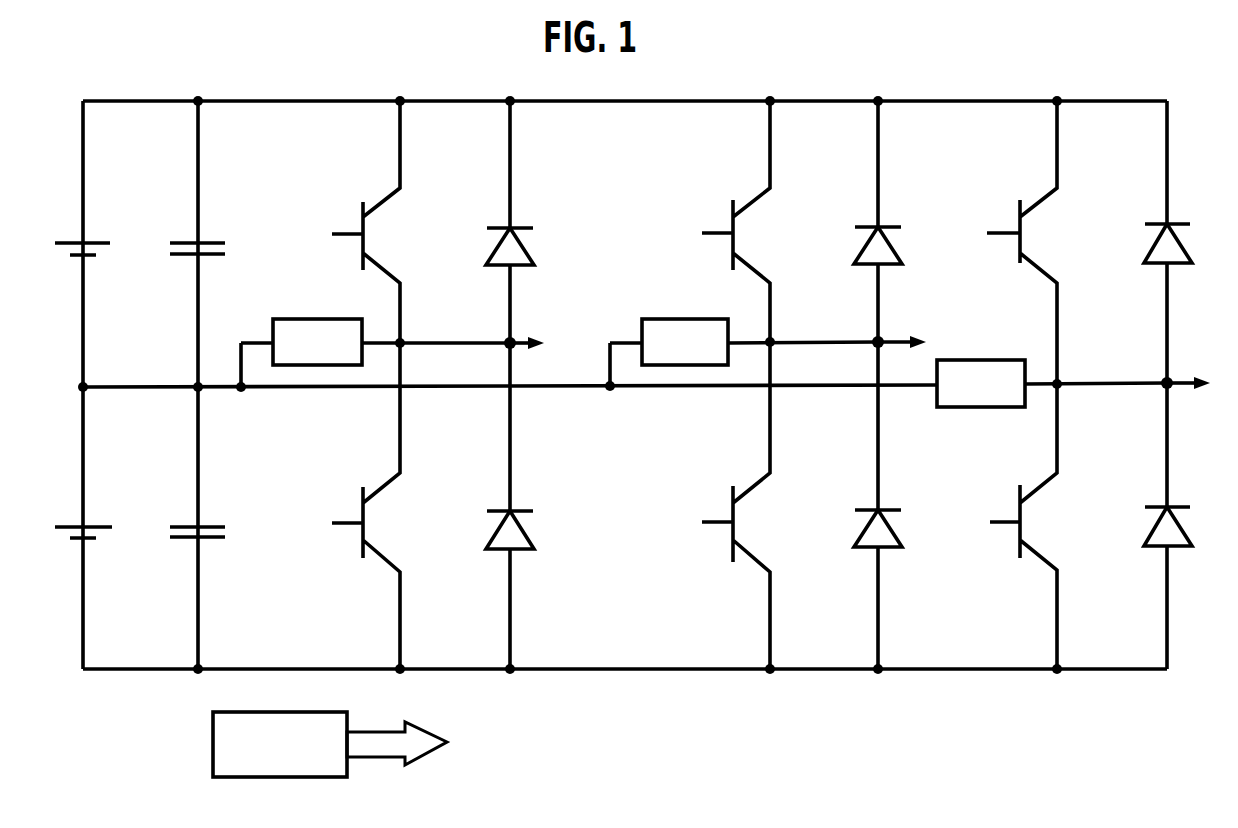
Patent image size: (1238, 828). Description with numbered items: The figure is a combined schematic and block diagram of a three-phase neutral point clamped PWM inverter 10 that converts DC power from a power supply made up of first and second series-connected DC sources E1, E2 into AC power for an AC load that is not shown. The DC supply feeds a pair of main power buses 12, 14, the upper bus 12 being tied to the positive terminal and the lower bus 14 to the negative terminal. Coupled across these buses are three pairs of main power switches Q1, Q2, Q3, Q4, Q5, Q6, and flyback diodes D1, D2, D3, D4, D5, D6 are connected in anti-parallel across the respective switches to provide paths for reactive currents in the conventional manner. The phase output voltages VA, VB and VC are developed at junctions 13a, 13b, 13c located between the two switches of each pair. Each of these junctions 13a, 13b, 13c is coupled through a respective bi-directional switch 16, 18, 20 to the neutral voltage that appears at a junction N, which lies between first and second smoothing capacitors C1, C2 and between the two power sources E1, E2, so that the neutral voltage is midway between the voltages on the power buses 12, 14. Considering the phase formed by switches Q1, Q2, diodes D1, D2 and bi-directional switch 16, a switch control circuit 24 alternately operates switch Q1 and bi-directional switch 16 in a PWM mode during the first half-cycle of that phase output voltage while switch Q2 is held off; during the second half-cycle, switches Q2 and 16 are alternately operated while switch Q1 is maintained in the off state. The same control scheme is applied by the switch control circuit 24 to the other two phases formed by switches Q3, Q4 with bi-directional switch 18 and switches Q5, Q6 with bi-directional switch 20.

The neutral point clamped PWM inverter 10 is at (926, 680).
The main power bus 12 is at (330, 100).
The main power bus 14 is at (318, 671).
The junction 13a is at (513, 340).
The junction 13b is at (881, 338).
The junction 13c is at (1172, 378).
The bi-directional switch 16 is at (305, 319).
The bi-directional switch 18 is at (700, 319).
The bi-directional switch 20 is at (1030, 332).
The switch control circuit 24 is at (272, 712).
The junction N is at (197, 386).
The DC source E1 is at (73, 243).
The DC source E2 is at (73, 527).
The smoothing capacitor C1 is at (214, 243).
The smoothing capacitor C2 is at (214, 527).
The main power switch Q1 is at (386, 195).
The main power switch Q2 is at (390, 568).
The main power switch Q3 is at (756, 195).
The main power switch Q4 is at (753, 557).
The main power switch Q5 is at (1043, 196).
The main power switch Q6 is at (1040, 556).
The flyback diode D1 is at (520, 227).
The flyback diode D2 is at (527, 510).
The flyback diode D3 is at (865, 258).
The flyback diode D4 is at (893, 508).
The flyback diode D5 is at (1158, 222).
The flyback diode D6 is at (1158, 505).